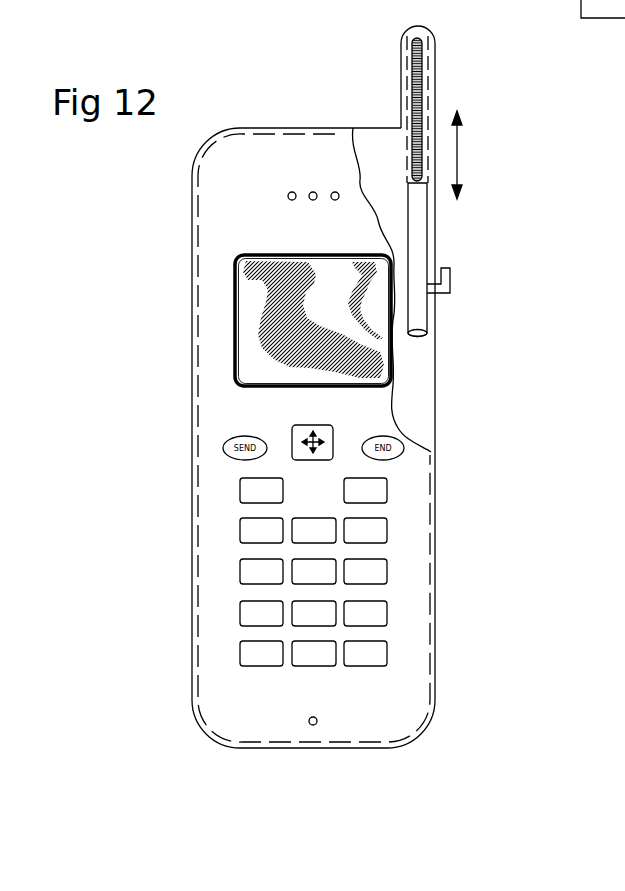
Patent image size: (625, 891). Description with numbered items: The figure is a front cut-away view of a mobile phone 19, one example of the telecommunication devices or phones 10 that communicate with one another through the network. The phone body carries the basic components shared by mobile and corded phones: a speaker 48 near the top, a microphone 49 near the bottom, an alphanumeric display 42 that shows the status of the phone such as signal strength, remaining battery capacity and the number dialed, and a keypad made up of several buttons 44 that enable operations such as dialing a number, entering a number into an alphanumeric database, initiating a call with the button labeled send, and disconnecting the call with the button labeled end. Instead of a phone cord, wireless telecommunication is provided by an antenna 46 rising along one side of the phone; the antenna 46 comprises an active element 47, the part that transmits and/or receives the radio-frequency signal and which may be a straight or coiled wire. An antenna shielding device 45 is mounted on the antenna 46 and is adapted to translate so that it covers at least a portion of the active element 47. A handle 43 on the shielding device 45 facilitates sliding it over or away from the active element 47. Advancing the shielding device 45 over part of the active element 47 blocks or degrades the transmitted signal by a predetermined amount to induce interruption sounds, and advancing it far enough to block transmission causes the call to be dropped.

The telecommunication device 10 is at (435, 670).
The mobile phone 19 is at (436, 632).
The alphanumeric display 42 is at (377, 307).
The handle 43 is at (450, 281).
The buttons 44 is at (383, 572).
The antenna shielding device 45 is at (428, 227).
The antenna 46 is at (434, 57).
The active element 47 is at (423, 78).
The speaker 48 is at (314, 192).
The microphone 49 is at (313, 726).